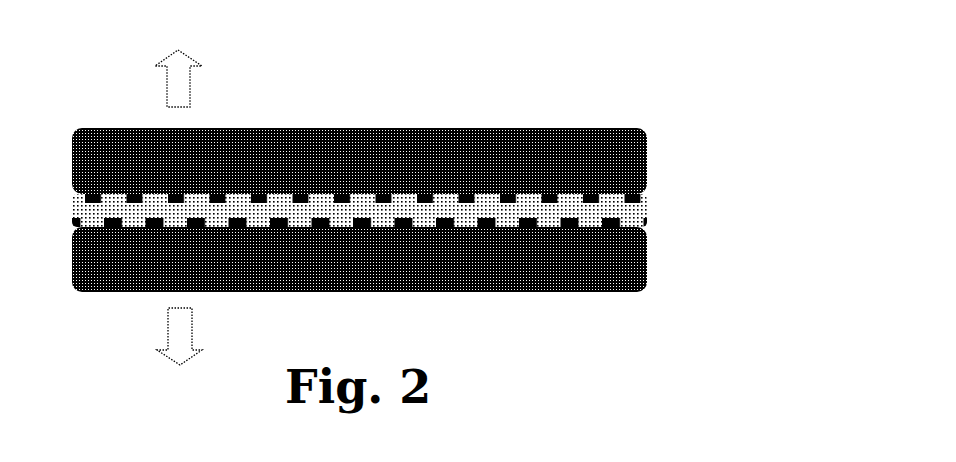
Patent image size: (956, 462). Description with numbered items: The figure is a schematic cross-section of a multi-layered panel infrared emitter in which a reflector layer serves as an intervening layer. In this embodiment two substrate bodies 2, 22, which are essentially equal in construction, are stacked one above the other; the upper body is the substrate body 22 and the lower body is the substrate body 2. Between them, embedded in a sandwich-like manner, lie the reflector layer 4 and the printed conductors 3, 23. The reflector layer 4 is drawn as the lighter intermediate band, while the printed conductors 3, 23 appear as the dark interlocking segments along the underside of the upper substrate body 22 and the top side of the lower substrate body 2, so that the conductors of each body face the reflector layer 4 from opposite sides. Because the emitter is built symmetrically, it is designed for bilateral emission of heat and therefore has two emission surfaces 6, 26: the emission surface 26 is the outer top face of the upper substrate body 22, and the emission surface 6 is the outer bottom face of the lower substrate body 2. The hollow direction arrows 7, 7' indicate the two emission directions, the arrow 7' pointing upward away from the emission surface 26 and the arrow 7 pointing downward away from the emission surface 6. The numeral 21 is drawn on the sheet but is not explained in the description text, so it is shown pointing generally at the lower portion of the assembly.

The substrate body 2 is at (113, 265).
The substrate body 22 is at (252, 150).
The reflector layer 4 is at (72, 217).
The printed conductor 3 is at (355, 225).
The printed conductor 23 is at (419, 197).
The emission surface 26 is at (603, 77).
The emission surface 6 is at (530, 338).
The laminate / composite 21 is at (602, 310).
The direction arrow 7 is at (190, 334).
The direction arrow 7' is at (197, 67).